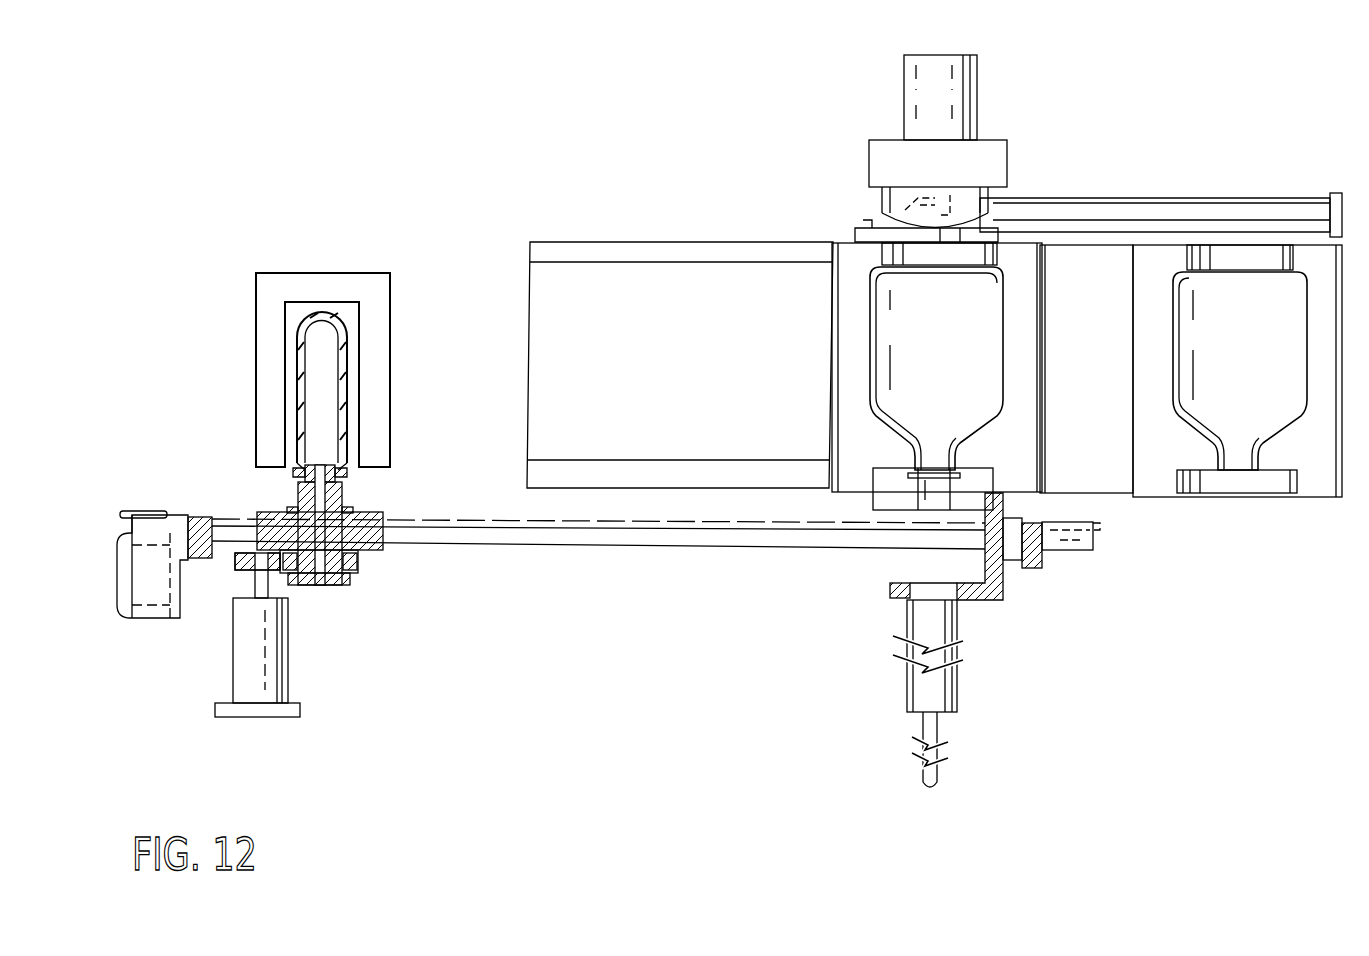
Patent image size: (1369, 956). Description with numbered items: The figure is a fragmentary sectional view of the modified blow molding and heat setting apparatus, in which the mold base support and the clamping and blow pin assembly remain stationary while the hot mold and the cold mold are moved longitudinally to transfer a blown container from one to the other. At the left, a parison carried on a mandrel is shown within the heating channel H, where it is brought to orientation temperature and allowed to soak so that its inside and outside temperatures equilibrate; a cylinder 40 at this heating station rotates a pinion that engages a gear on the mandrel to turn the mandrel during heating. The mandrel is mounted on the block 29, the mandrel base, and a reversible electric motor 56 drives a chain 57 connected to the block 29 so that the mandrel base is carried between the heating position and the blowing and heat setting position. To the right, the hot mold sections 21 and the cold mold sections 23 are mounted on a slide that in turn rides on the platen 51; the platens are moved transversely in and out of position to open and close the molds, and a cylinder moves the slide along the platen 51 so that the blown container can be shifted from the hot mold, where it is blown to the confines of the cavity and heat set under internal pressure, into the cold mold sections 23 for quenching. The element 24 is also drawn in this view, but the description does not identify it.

The heating channel H is at (268, 368).
The mold sections 21 is at (832, 340).
The mold sections 23 is at (1150, 250).
The mold block 24 is at (1085, 258).
The block 29 is at (385, 553).
The cylinder 40 is at (252, 638).
The platen 51 is at (664, 242).
The reversible electric motor 56 is at (117, 567).
The chain 57 is at (458, 520).